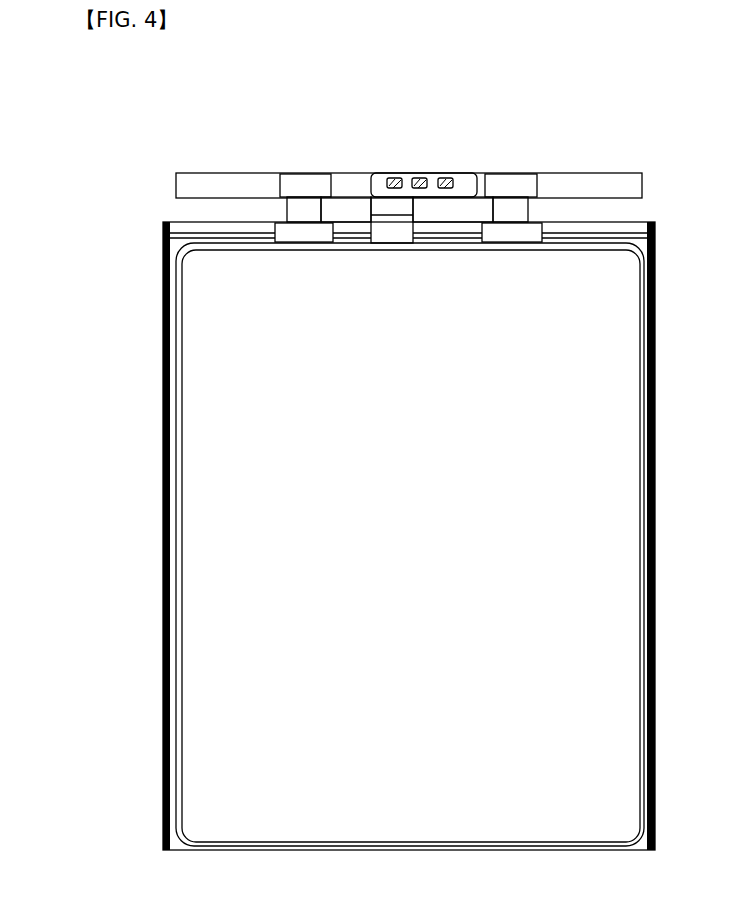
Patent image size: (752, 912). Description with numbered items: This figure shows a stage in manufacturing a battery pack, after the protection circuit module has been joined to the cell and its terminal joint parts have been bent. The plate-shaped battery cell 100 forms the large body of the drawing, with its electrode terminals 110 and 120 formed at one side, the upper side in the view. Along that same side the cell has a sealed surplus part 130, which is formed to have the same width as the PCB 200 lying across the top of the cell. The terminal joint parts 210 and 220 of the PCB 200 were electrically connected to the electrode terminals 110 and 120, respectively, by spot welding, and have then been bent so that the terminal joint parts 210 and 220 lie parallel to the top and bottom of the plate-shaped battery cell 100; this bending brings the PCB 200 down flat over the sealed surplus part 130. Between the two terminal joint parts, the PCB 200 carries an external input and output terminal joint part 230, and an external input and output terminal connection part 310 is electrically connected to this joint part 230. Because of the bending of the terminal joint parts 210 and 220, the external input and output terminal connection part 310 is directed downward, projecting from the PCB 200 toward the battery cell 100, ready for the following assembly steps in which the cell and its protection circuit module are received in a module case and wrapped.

The plate-shaped battery cell 100 is at (438, 645).
The electrode terminal 110 is at (303, 210).
The electrode terminal 120 is at (515, 210).
The sealed surplus part 130 is at (255, 227).
The protection circuit module (PCB) 200 is at (167, 182).
The terminal joint part 210 is at (303, 183).
The terminal joint part 220 is at (513, 183).
The external input and output terminal joint part 230 is at (422, 175).
The external input and output terminal connection part 310 is at (397, 207).